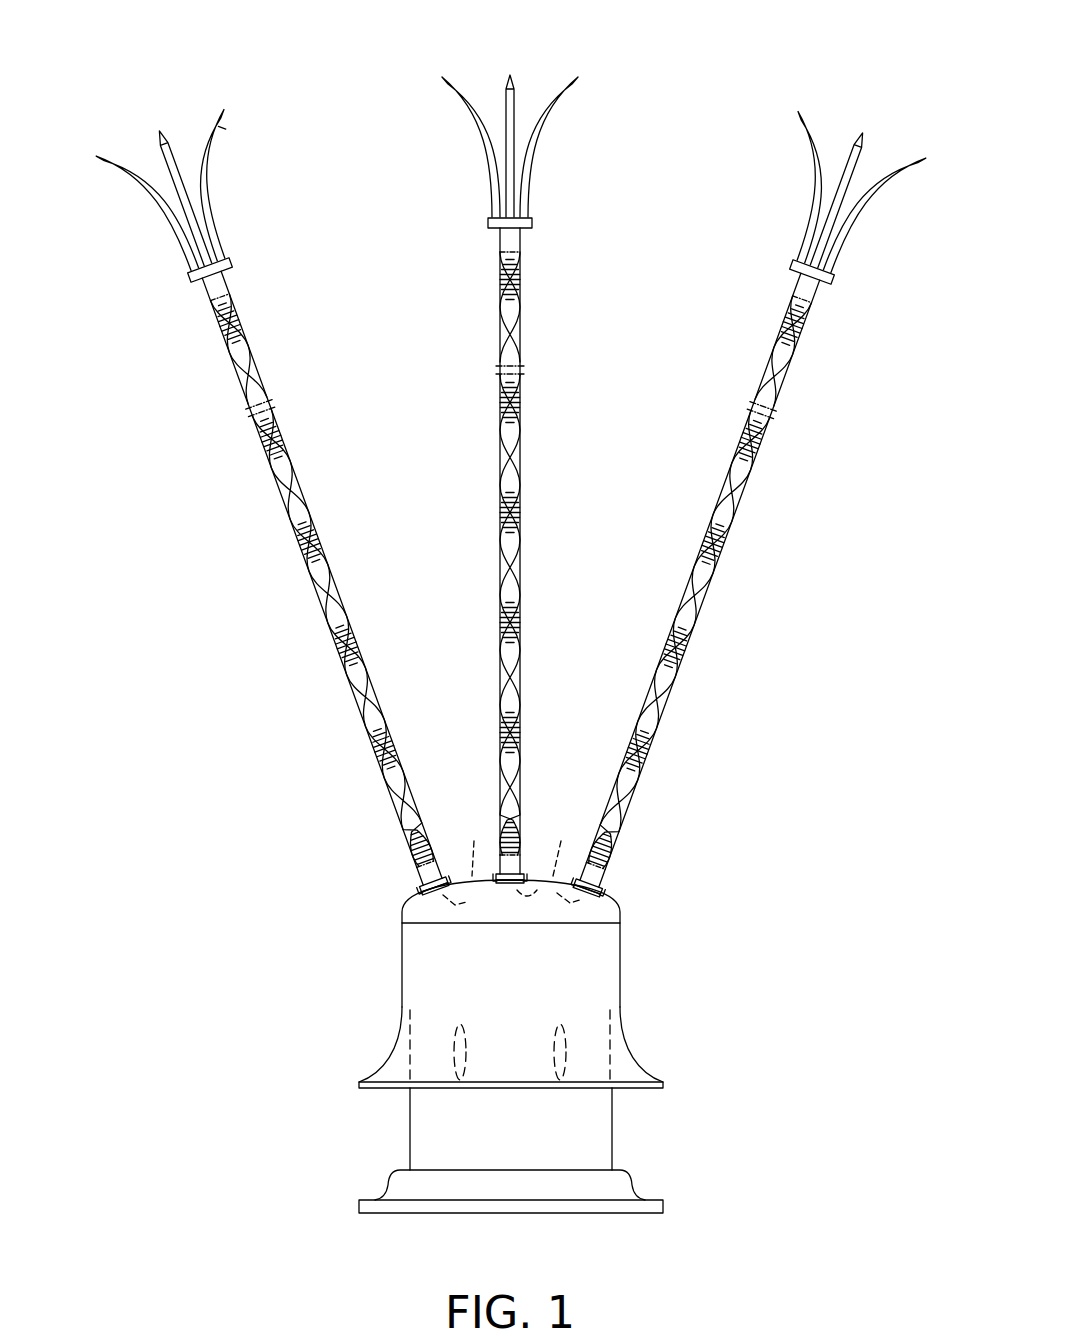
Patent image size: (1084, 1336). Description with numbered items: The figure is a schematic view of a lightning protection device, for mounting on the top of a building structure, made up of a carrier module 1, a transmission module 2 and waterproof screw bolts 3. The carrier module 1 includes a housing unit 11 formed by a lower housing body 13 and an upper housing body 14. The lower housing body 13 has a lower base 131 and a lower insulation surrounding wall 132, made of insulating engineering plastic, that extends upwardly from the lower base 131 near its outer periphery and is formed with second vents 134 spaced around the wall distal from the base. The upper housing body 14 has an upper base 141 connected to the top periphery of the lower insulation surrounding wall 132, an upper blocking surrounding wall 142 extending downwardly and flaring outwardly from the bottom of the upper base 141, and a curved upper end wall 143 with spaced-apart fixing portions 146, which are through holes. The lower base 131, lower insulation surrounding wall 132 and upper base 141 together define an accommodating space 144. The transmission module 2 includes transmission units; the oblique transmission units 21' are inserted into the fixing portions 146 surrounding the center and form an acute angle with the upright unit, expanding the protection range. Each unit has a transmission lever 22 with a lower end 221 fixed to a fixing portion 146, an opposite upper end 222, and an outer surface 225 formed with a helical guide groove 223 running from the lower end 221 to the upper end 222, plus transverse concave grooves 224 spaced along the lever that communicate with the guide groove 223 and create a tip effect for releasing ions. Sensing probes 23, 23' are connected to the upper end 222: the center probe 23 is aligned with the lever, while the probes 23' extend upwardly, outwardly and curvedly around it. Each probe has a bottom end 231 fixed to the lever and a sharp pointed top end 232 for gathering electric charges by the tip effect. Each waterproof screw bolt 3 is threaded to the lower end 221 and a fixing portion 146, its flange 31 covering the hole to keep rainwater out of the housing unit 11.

The carrier module 1 is at (198, 1168).
The housing unit 11 is at (245, 1023).
The lower housing body 13 is at (383, 1119).
The lower base 131 is at (640, 1213).
The lower insulation surrounding wall 132 is at (612, 1103).
The accommodating space 144 is at (590, 1127).
The upper housing body 14 is at (381, 996).
The upper base 141 is at (611, 948).
The upper blocking surrounding wall 142 is at (647, 1068).
The upper end wall 143 is at (617, 907).
The second vents 134 is at (566, 1040).
The fixing portions 146 is at (511, 856).
The waterproof screw bolt 3 is at (405, 885).
The flange 31 is at (497, 884).
The transmission module 2 is at (150, 100).
The oblique transmission unit 21' is at (450, 357).
The transmission lever 22 is at (488, 620).
The lower end 221 is at (420, 880).
The upper end 222 is at (213, 283).
The guide groove 223 is at (272, 462).
The concave grooves 224 is at (262, 370).
The outer surface 225 is at (298, 522).
The sensing probe 23 is at (534, 134).
The sensing probes 23' is at (498, 153).
The bottom end 231 is at (232, 264).
The top end 232 is at (222, 115).